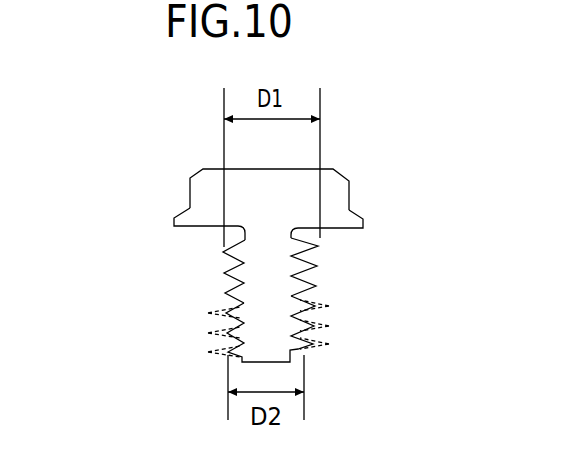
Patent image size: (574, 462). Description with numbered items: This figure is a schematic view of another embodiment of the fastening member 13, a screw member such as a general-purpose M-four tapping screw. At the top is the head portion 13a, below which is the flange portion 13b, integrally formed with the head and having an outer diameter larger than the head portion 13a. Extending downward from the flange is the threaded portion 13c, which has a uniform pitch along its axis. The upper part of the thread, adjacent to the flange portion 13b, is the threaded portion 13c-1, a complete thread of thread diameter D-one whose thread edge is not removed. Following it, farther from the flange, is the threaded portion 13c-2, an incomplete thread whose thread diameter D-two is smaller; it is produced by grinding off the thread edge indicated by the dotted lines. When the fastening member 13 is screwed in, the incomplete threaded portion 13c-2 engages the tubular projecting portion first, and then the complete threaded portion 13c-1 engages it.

The fastening member 13 is at (245, 210).
The head portion 13a is at (333, 170).
The flange portion 13b is at (362, 218).
The threaded portion 13c is at (238, 300).
The threaded portion (complete thread) 13c-1 is at (222, 267).
The threaded portion (incomplete thread) 13c-2 is at (216, 331).